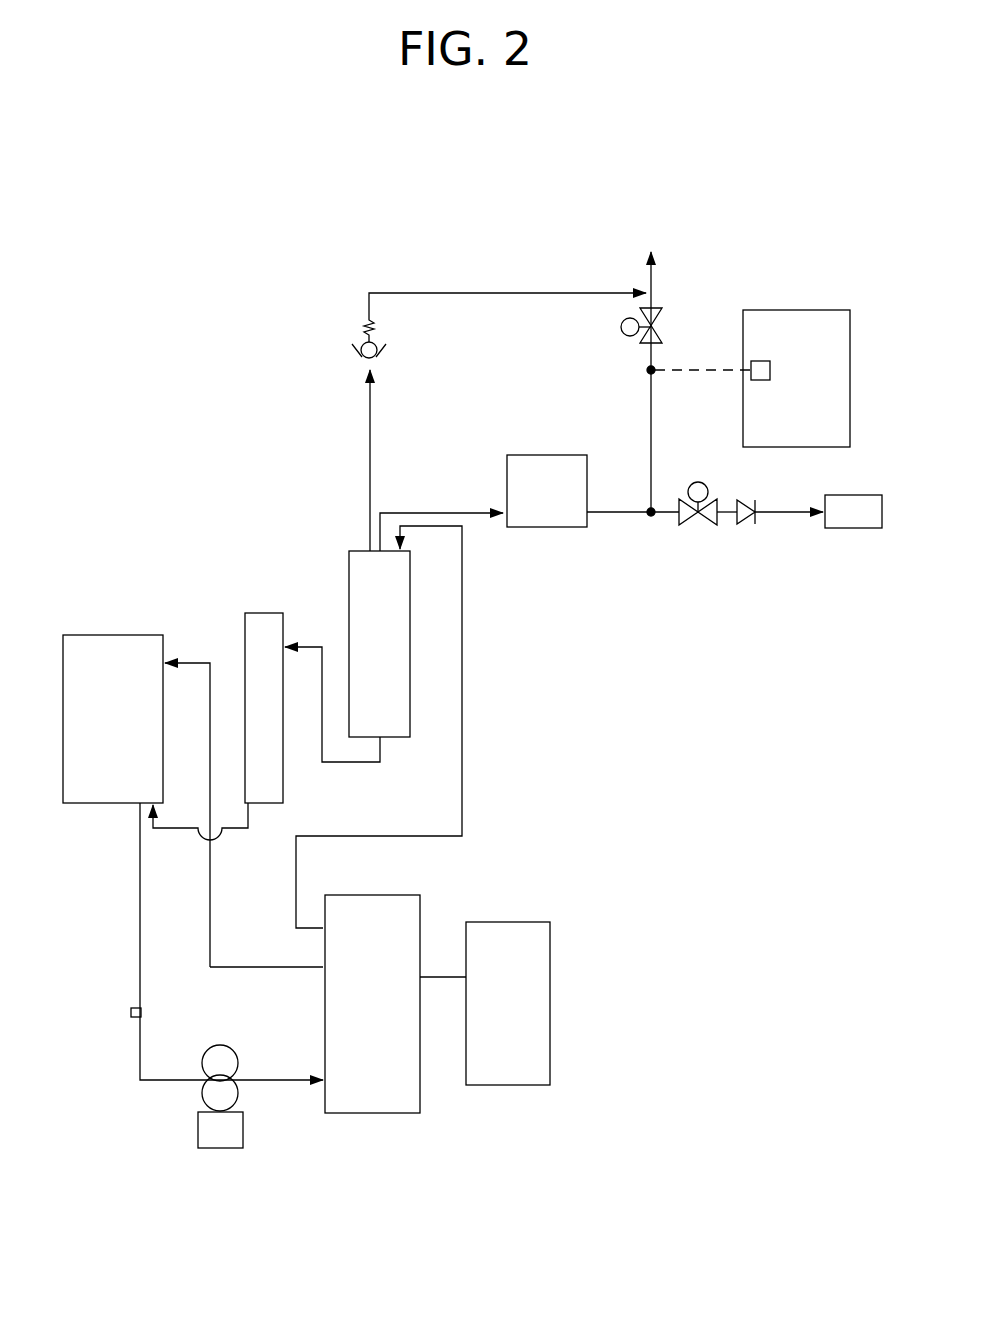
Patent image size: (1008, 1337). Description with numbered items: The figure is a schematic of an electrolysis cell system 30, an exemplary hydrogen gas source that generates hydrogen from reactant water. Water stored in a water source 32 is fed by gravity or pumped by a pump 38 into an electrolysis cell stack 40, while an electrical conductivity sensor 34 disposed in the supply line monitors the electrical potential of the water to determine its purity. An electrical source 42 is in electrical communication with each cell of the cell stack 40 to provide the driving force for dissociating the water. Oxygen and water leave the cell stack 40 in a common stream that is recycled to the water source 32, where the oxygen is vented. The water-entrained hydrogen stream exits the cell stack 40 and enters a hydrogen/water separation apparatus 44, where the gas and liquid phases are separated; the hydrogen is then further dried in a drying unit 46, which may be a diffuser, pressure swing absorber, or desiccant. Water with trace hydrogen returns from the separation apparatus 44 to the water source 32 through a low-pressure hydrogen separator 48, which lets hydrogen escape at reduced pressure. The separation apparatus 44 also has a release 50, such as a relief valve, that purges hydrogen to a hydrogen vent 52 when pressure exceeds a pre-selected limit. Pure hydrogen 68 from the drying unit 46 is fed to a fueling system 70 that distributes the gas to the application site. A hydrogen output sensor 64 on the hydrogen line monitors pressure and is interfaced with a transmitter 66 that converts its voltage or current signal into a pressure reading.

The electrolysis cell system 30 is at (240, 320).
The water source 32 is at (105, 633).
The electrical conductivity sensor 34 is at (131, 1013).
The pump 38 is at (238, 1095).
The electrolysis cell stack 40 is at (380, 1114).
The electrical source 42 is at (551, 998).
The hydrogen/water separation apparatus 44 is at (424, 648).
The drying unit 46 is at (549, 528).
The low-pressure hydrogen separator 48 is at (265, 612).
The release 50 is at (352, 348).
The hydrogen vent 52 is at (645, 252).
The hydrogen output sensor 64 is at (760, 381).
The transmitter 66 is at (805, 310).
The pure hydrogen 68 is at (423, 512).
The fueling system 70 is at (848, 496).